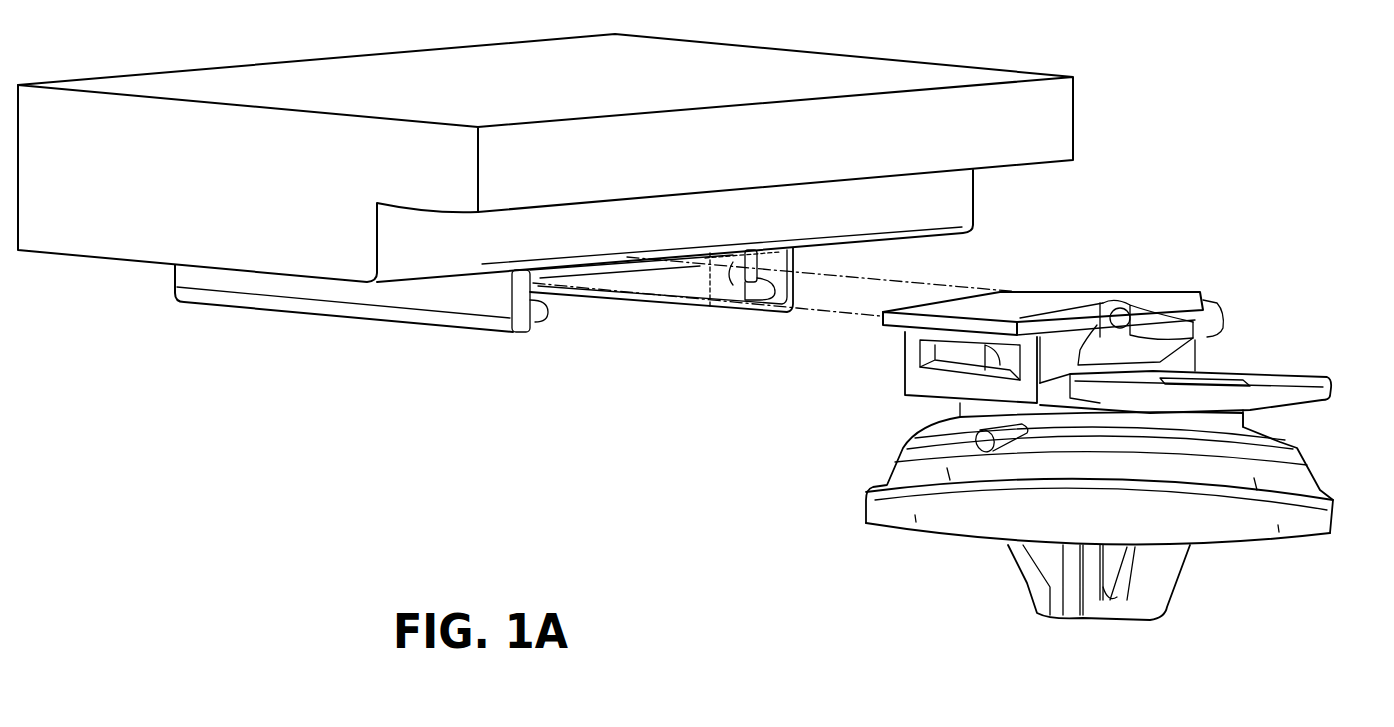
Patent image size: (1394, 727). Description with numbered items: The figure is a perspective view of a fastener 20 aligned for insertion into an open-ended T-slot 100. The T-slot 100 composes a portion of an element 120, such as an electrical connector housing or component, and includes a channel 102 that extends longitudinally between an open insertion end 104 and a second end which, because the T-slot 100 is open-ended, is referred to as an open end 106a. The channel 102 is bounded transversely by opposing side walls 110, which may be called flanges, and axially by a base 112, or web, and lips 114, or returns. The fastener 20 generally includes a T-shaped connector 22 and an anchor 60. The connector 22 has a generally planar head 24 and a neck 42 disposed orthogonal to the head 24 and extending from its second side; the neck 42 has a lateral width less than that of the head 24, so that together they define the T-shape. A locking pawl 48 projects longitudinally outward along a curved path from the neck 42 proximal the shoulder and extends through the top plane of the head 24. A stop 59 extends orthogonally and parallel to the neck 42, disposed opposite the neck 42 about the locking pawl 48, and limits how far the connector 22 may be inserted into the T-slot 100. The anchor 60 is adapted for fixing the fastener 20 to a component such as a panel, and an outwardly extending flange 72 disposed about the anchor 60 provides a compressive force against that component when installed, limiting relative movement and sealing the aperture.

The fastener 20 is at (1095, 449).
The T-shaped connector portion 22 is at (1043, 330).
The head 24 is at (880, 320).
The neck 42 is at (903, 375).
The locking pawl 48 is at (1222, 318).
The stop 59 is at (1103, 383).
The anchor 60 is at (1107, 620).
The flange 72 is at (1330, 523).
The T-slot 100 is at (609, 232).
The channel 102 is at (735, 250).
The open insertion end 104 is at (627, 252).
The open end 106a is at (178, 277).
The side walls 110 is at (475, 298).
The base 112 is at (106, 240).
The lips 114 is at (545, 312).
The element 120 is at (1040, 127).